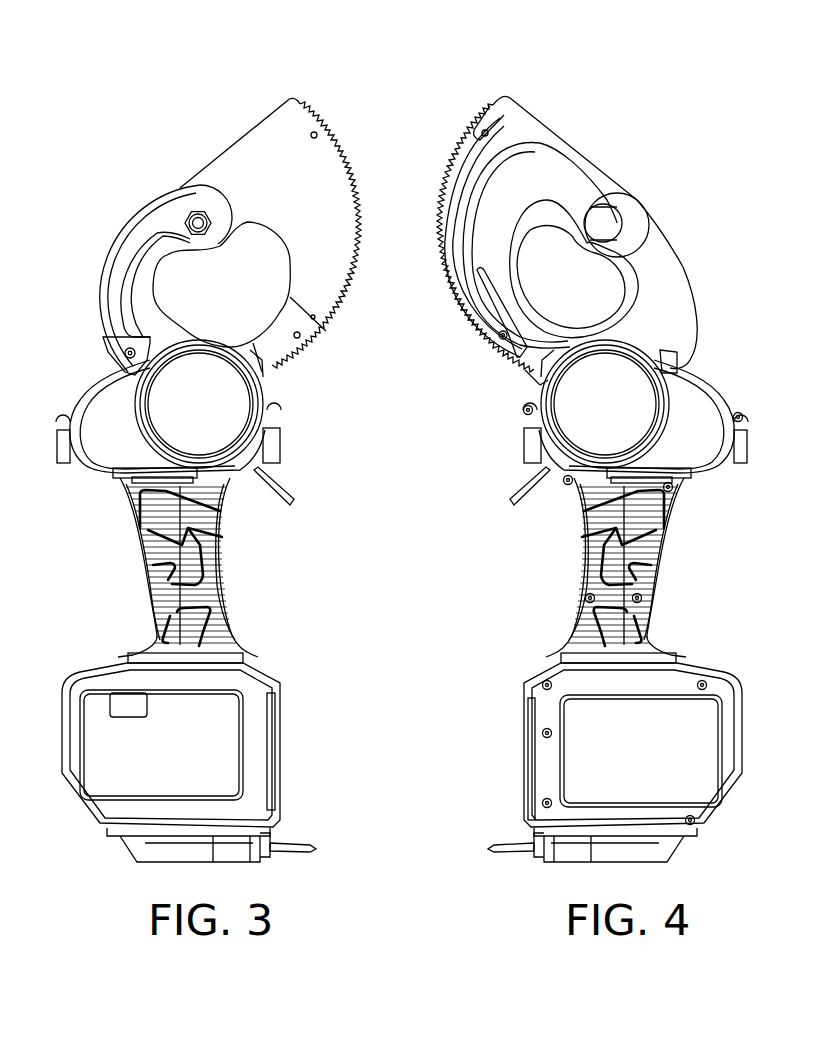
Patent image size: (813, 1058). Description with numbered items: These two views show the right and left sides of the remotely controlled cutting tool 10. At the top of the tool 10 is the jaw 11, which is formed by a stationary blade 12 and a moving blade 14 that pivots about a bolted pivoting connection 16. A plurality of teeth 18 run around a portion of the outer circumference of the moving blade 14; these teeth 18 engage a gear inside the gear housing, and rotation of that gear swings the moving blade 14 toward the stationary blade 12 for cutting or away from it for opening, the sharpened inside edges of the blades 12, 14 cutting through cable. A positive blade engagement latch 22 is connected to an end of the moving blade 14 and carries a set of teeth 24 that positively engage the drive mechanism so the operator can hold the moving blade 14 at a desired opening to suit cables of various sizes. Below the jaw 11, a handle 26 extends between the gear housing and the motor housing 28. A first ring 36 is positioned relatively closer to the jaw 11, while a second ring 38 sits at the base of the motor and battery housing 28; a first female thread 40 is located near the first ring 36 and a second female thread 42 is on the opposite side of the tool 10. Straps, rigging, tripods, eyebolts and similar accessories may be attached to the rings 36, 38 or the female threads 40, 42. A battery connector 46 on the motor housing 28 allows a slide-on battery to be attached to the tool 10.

In FIG. 3, the remotely controlled cutting tool 10 is at (80, 88).
In FIG. 4, the remotely controlled cutting tool 10 is at (432, 86).
In FIG. 3, the jaw 11 is at (200, 128).
In FIG. 4, the jaw 11 is at (640, 145).
In FIG. 3, the stationary blade 12 is at (150, 285).
In FIG. 4, the stationary blade 12 is at (680, 263).
In FIG. 3, the moving blade 14 is at (287, 203).
In FIG. 4, the moving blade 14 is at (515, 212).
In FIG. 3, the bolted pivoting connection 16 is at (198, 222).
In FIG. 4, the bolted pivoting connection 16 is at (615, 222).
In FIG. 3, the teeth 18 is at (343, 137).
In FIG. 4, the teeth 18 is at (438, 197).
In FIG. 4, the positive blade engagement latch 22 is at (503, 335).
In FIG. 4, the teeth 24 is at (523, 382).
In FIG. 3, the handle 26 is at (228, 615).
In FIG. 4, the handle 26 is at (576, 615).
In FIG. 3, the motor housing 28 is at (280, 755).
In FIG. 4, the motor housing 28 is at (520, 745).
In FIG. 3, the first ring 36 is at (290, 503).
In FIG. 4, the first ring 36 is at (512, 495).
In FIG. 3, the second ring 38 is at (316, 850).
In FIG. 4, the second ring 38 is at (487, 855).
In FIG. 3, the first female thread 40 is at (280, 445).
In FIG. 4, the first female thread 40 is at (522, 450).
In FIG. 3, the second female thread 42 is at (57, 445).
In FIG. 4, the second female thread 42 is at (745, 447).
In FIG. 3, the battery connector 46 is at (170, 865).
In FIG. 4, the battery connector 46 is at (575, 867).